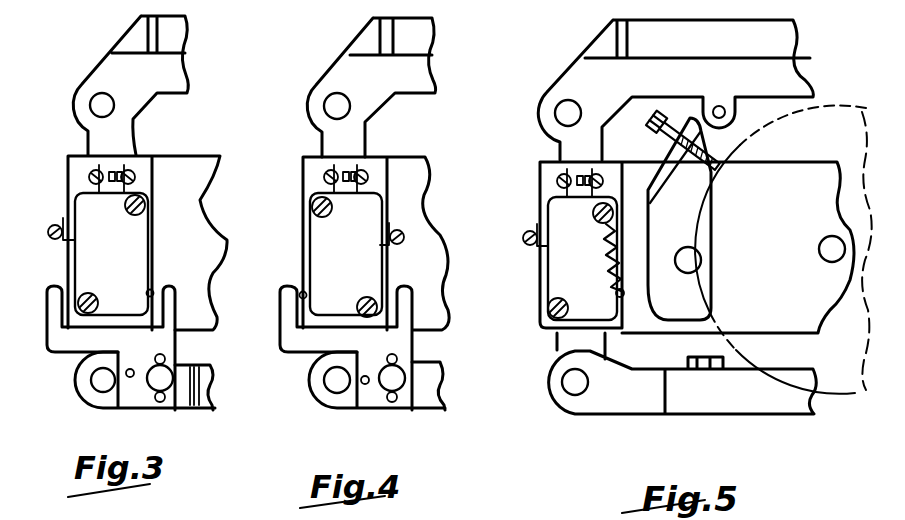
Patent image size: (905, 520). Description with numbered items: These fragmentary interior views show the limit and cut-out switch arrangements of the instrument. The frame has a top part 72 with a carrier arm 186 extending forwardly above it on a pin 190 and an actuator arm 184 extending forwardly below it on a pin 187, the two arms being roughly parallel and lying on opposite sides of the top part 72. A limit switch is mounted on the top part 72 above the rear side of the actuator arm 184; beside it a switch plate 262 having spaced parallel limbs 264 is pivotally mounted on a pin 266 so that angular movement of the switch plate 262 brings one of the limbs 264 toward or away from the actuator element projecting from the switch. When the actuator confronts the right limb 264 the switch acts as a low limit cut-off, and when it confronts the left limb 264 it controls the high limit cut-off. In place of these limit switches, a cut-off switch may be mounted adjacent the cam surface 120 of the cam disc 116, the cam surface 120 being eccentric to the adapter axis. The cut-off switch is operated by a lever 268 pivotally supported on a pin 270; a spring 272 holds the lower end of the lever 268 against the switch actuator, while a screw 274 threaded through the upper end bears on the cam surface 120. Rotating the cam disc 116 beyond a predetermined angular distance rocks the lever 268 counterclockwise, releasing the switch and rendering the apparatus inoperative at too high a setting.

In FIG. 3, the top part 72 is at (201, 227).
In FIG. 4, the top part 72 is at (412, 170).
In FIG. 5, the top part 72 is at (792, 177).
In FIG. 5, the cam disc 116 is at (852, 380).
In FIG. 5, the cam surface 120 is at (818, 127).
In FIG. 3, the actuator arm 184 is at (205, 406).
In FIG. 4, the actuator arm 184 is at (436, 394).
In FIG. 5, the actuator arm 184 is at (778, 400).
In FIG. 3, the carrier arm 186 is at (175, 83).
In FIG. 4, the carrier arm 186 is at (410, 76).
In FIG. 5, the carrier arm 186 is at (790, 82).
In FIG. 4, the pin 187 is at (333, 388).
In FIG. 5, the pin 187 is at (573, 390).
In FIG. 3, the pin 190 is at (95, 101).
In FIG. 4, the pin 190 is at (332, 100).
In FIG. 5, the pin 190 is at (560, 105).
In FIG. 3, the switch plate 262 is at (163, 357).
In FIG. 3, the limbs 264 is at (54, 292).
In FIG. 3, the pin 266 is at (127, 377).
In FIG. 5, the lever 268 is at (682, 218).
In FIG. 5, the pin 270 is at (690, 262).
In FIG. 5, the spring 272 is at (600, 230).
In FIG. 5, the screw 274 is at (690, 118).